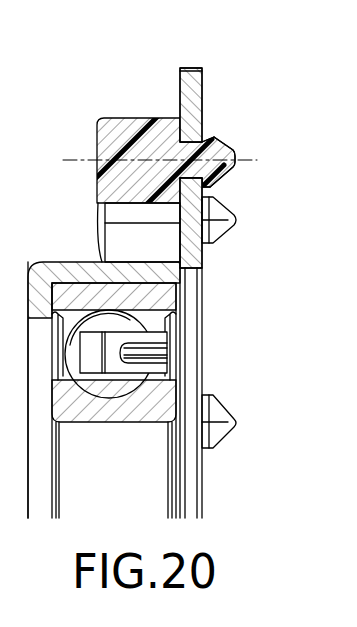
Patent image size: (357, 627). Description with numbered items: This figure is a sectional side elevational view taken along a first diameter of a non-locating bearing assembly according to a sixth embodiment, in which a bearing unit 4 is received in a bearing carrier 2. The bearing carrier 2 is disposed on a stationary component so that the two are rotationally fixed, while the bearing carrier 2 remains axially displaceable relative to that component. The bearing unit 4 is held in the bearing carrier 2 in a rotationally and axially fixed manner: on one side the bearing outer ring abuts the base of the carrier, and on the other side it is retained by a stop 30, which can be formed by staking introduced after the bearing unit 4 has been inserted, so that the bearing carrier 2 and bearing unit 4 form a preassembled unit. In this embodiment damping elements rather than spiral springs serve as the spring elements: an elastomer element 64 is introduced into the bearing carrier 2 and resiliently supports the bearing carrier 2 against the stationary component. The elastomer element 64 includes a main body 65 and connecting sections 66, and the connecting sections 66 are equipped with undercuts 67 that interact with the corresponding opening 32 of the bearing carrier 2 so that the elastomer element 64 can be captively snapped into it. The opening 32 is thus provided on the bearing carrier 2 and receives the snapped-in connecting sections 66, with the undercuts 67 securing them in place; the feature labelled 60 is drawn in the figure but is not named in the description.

The bearing carrier 2 is at (204, 77).
The bearing unit 4 is at (228, 326).
The stop 30 is at (182, 290).
The opening 32 is at (204, 183).
The chamfered tip 60 is at (222, 157).
The elastomer element 64 is at (118, 180).
The main body 65 is at (133, 137).
The connecting section 66 is at (231, 226).
The undercut 67 is at (201, 137).